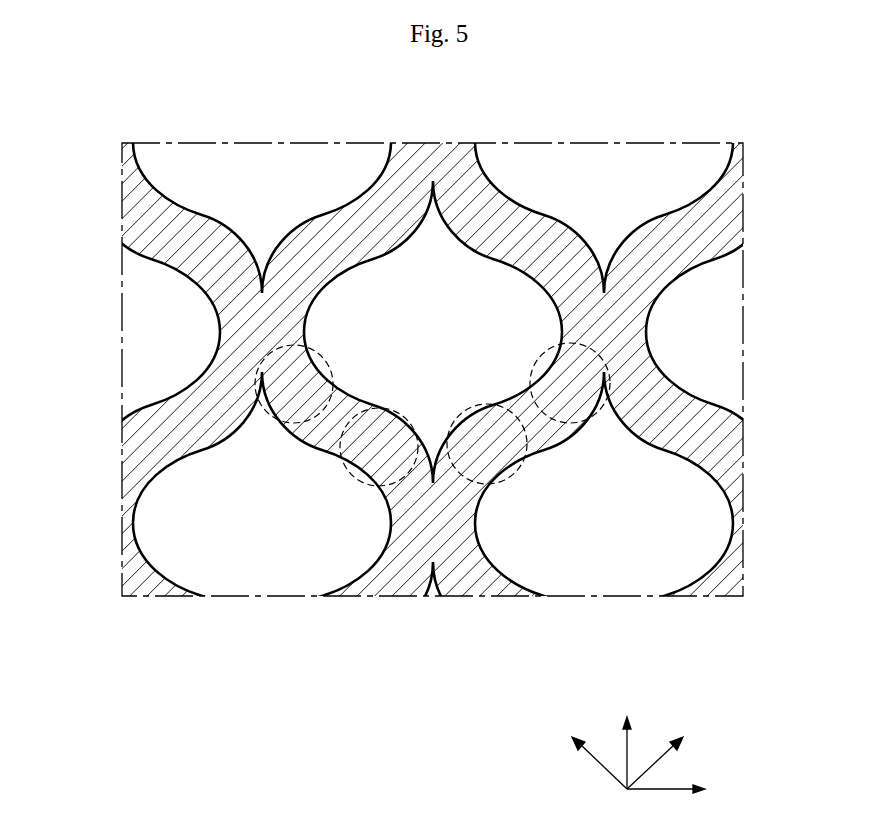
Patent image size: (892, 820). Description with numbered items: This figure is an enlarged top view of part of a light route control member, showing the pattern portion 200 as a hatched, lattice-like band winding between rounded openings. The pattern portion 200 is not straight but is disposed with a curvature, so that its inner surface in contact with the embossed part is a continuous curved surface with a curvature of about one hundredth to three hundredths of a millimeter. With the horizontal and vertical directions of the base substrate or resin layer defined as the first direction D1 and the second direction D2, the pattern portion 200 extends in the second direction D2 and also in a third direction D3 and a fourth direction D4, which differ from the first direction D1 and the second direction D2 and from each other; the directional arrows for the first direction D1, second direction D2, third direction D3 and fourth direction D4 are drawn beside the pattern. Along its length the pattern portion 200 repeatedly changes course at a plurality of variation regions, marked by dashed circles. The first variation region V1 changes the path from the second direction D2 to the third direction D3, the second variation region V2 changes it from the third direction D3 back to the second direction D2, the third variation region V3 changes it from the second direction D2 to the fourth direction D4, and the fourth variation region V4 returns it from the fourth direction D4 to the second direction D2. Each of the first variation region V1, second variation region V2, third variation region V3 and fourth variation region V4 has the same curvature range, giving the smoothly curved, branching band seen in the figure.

The pattern portion 200 is at (482, 207).
The first variation region V1 is at (512, 474).
The second variation region V2 is at (600, 408).
The third variation region V3 is at (357, 472).
The fourth variation region V4 is at (263, 392).
The first direction D1 is at (678, 791).
The second direction D2 is at (628, 739).
The third direction D3 is at (663, 751).
The fourth direction D4 is at (591, 751).